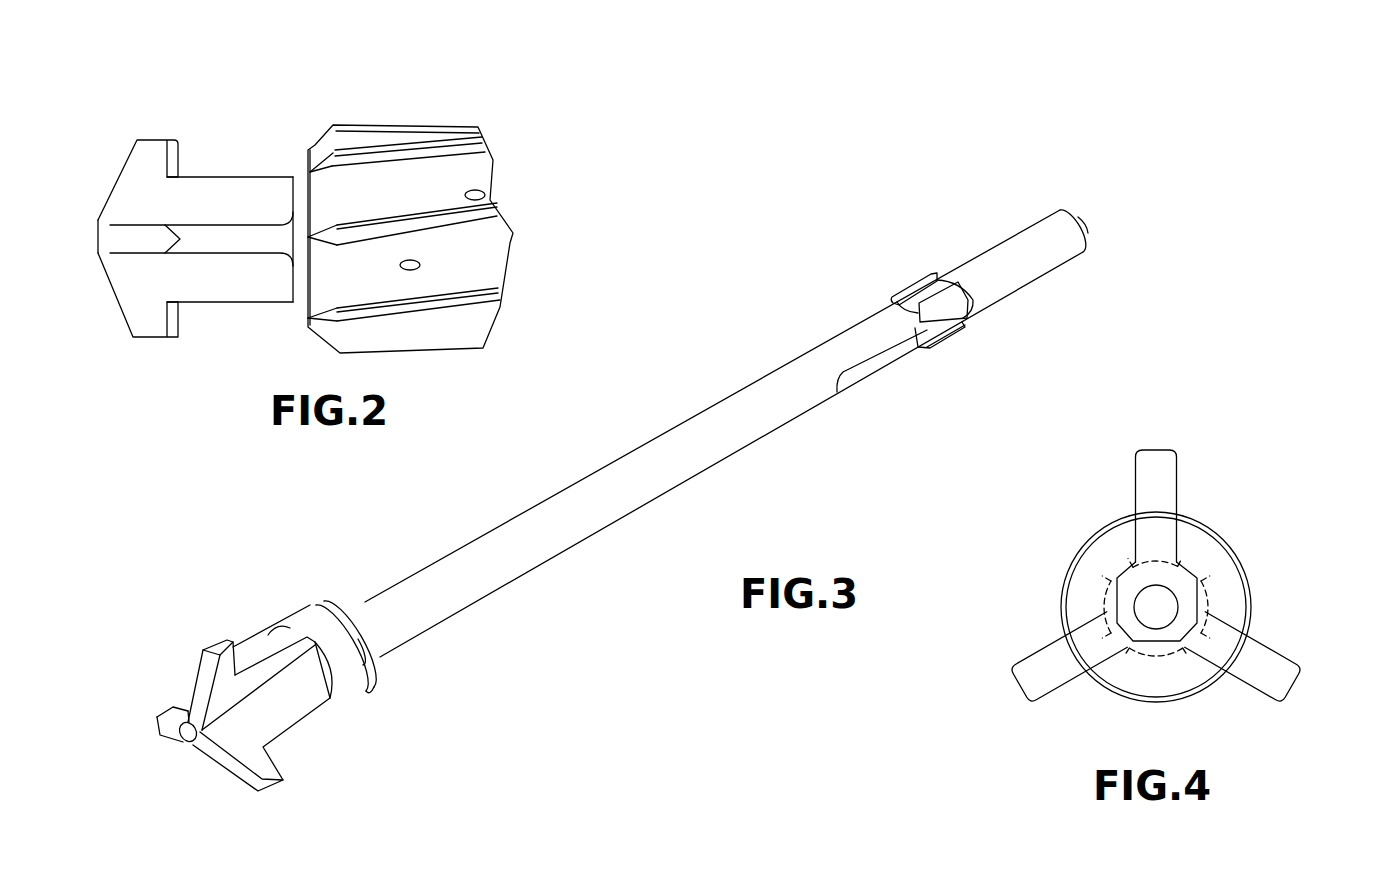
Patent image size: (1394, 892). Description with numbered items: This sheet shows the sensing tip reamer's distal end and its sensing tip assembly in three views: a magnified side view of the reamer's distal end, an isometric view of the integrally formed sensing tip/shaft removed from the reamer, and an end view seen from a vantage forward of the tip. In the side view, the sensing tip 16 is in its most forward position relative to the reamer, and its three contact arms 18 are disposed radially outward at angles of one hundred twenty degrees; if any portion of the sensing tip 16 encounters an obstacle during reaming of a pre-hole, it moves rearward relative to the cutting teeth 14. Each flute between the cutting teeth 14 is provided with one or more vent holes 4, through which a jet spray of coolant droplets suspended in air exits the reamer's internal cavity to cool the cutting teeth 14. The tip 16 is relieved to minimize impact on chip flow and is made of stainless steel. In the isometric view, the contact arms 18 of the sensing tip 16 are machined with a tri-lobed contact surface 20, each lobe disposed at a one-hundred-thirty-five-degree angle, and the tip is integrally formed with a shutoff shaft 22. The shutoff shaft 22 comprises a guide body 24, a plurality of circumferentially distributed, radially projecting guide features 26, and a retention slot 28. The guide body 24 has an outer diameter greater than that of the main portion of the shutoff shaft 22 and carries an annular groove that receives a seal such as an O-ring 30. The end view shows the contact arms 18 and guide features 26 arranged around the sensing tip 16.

In FIG. 2, the vent holes 4 is at (420, 265).
In FIG. 2, the cutting teeth 14 is at (409, 97).
In FIG. 2, the sensing tip 16 is at (98, 238).
In FIG. 3, the sensing tip 16 is at (190, 742).
In FIG. 4, the sensing tip 16 is at (1143, 603).
In FIG. 2, the contact arms 18 is at (152, 150).
In FIG. 3, the contact arms 18 is at (216, 645).
In FIG. 4, the contact arms 18 is at (1177, 468).
In FIG. 3, the tri-lobed contact surface 20 is at (223, 758).
In FIG. 3, the shutoff shaft 22 is at (697, 414).
In FIG. 3, the guide body 24 is at (293, 612).
In FIG. 4, the guide body 24 is at (1205, 523).
In FIG. 3, the guide features 26 is at (912, 295).
In FIG. 4, the guide features 26 is at (1112, 558).
In FIG. 3, the retention slot 28 is at (883, 358).
In FIG. 3, the O-ring 30 is at (372, 695).